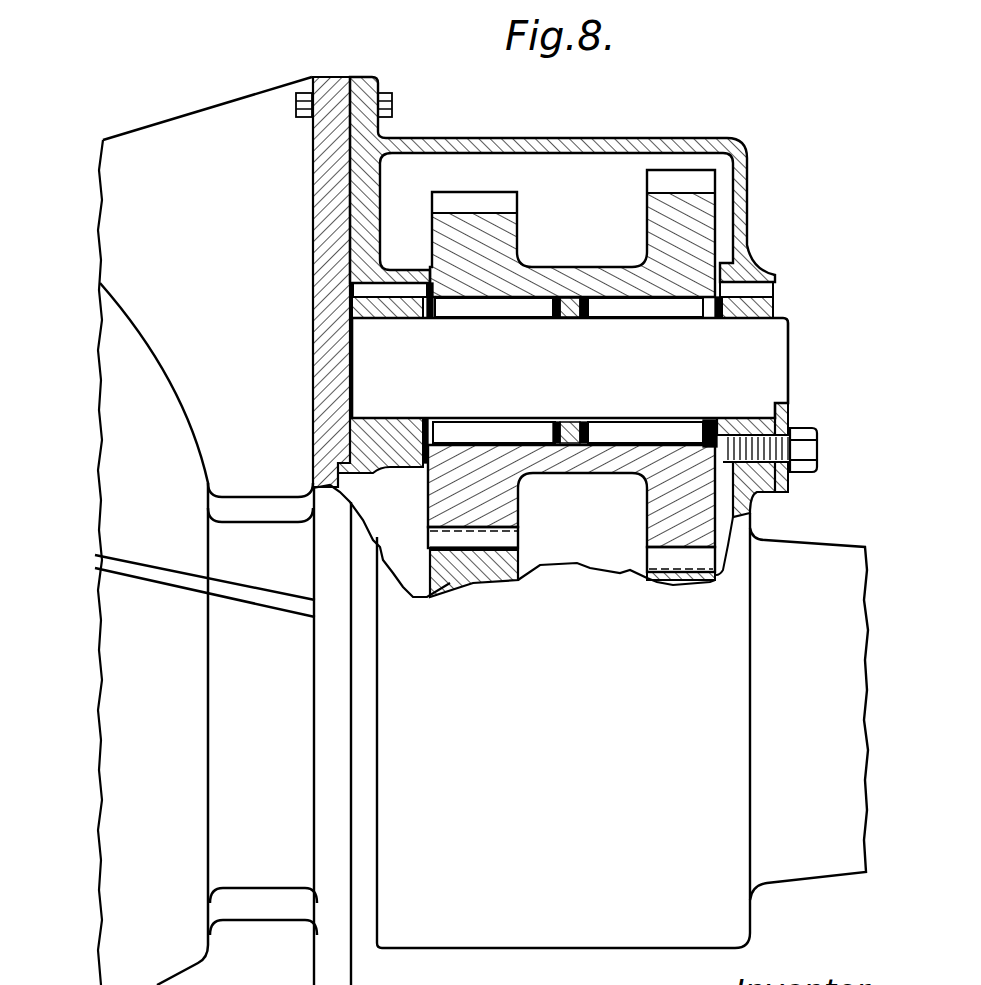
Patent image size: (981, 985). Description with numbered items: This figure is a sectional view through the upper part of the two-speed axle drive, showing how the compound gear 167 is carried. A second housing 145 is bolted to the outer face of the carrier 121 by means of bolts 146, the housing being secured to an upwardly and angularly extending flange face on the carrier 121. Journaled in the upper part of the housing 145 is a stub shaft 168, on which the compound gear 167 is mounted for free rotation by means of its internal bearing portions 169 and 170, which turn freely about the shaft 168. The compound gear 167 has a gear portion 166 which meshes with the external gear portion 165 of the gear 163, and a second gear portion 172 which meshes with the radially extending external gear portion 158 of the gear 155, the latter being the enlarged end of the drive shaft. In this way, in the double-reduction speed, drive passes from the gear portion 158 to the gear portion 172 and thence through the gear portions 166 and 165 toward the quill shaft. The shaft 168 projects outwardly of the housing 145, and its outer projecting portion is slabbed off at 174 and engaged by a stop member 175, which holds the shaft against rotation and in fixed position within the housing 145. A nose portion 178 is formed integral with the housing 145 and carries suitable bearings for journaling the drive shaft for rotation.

The carrier 121 is at (220, 113).
The bolts 146 is at (392, 104).
The second housing 145 is at (573, 144).
The gear portion of compound gear 166 is at (503, 230).
The second gear portion of compound gear 172 is at (653, 220).
The compound gear 167 is at (585, 270).
The stub shaft 168 is at (363, 370).
The internal bearing portion 169 is at (497, 312).
The internal bearing portion 170 is at (655, 315).
The slabbed-off portion 174 is at (780, 400).
The stop member 175 is at (787, 418).
The nose portion 178 is at (807, 553).
The gear 163 is at (476, 572).
The external gear portion 165 is at (500, 557).
The external gear portion 158 is at (657, 578).
The gear 155 is at (667, 570).